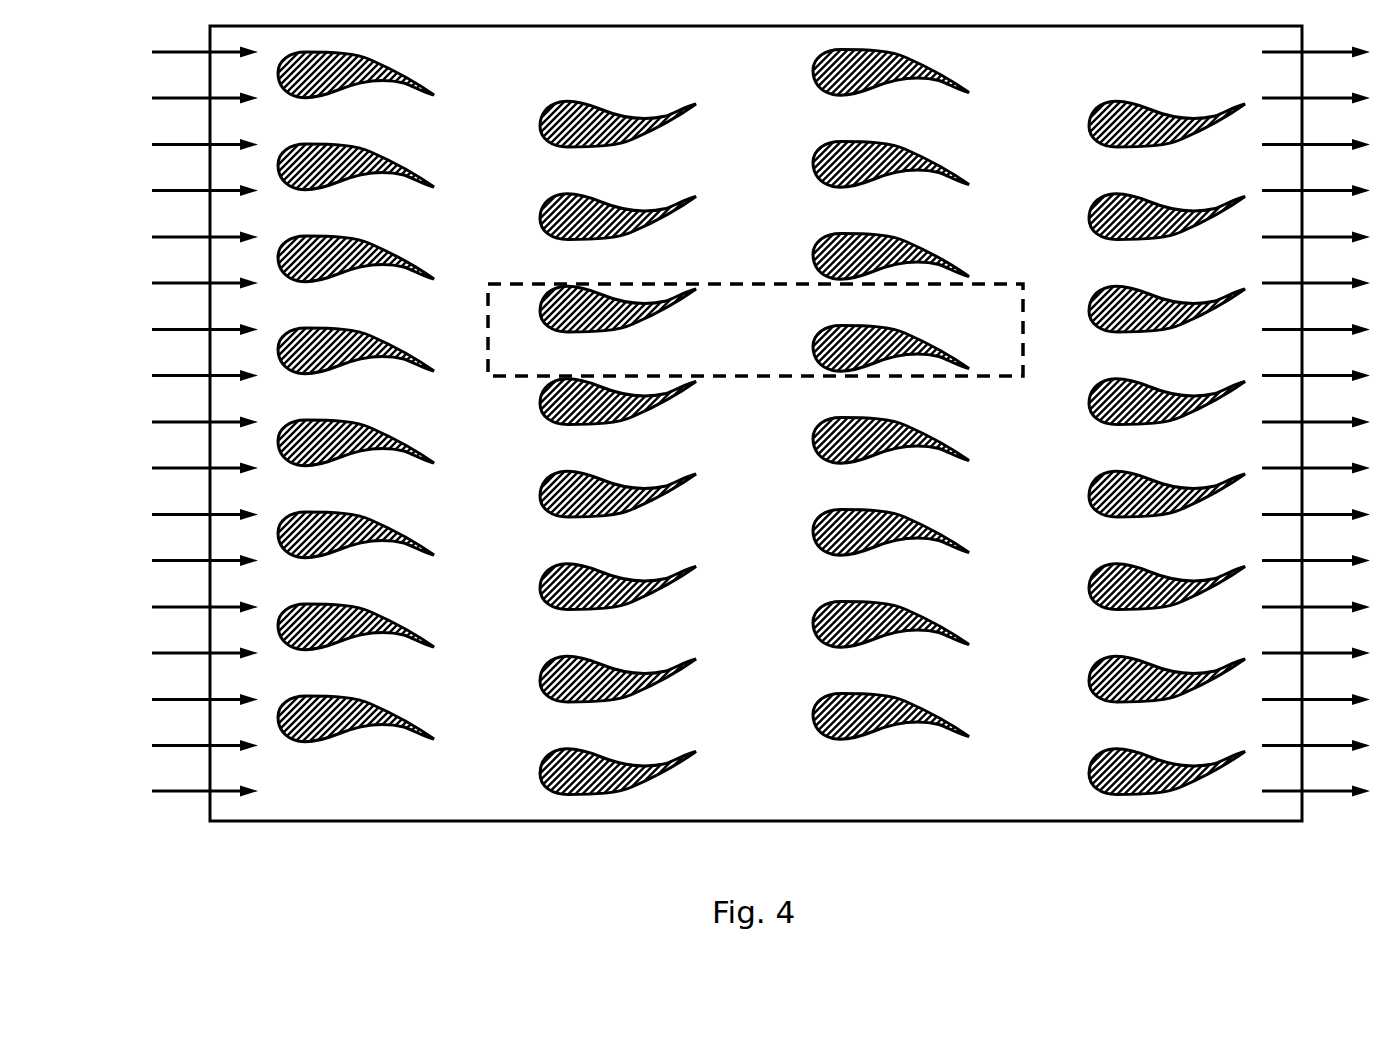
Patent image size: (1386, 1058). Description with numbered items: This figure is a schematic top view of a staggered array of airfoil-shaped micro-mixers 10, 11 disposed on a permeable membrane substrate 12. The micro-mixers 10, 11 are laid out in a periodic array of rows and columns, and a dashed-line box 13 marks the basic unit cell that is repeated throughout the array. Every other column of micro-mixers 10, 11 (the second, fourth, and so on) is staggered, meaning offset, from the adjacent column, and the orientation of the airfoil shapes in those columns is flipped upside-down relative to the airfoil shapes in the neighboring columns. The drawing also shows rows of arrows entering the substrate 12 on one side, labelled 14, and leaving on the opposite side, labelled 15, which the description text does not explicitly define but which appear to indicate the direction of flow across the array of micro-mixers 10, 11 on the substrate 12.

The airfoil-shaped micro-mixer 10 is at (884, 738).
The airfoil-shaped micro-mixer 11 is at (1166, 802).
The permeable membrane substrate 12 is at (453, 810).
The dashed-line box 13 is at (996, 275).
The inlet flow 14 is at (205, 439).
The outlet flow 15 is at (1316, 436).